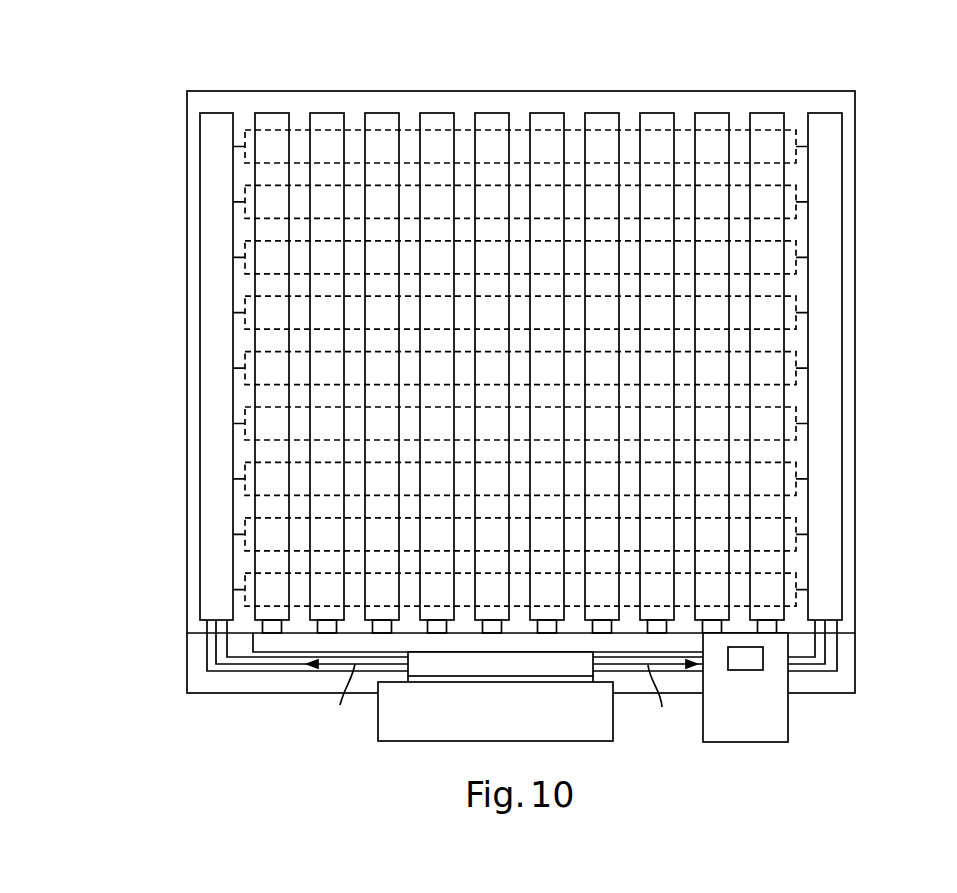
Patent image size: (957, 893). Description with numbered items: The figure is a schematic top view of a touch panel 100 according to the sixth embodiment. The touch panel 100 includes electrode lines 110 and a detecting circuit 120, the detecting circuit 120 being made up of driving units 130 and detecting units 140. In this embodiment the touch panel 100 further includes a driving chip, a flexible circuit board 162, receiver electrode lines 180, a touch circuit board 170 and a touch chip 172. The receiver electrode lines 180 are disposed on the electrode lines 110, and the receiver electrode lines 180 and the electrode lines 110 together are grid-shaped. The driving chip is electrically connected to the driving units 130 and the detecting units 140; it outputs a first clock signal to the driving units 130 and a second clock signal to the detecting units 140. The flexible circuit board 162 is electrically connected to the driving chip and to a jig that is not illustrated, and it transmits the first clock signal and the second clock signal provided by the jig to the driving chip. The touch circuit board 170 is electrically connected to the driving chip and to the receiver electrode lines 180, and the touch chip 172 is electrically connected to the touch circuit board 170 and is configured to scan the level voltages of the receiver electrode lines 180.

The touch panel 100 is at (75, 55).
The electrode lines 110 is at (440, 113).
The detecting circuit 120 is at (218, 102).
The driving units 130 is at (199, 151).
The detecting units 140 is at (843, 151).
The flexible circuit board 162 is at (395, 741).
The touch circuit board 170 is at (788, 717).
The touch chip 172 is at (747, 670).
The receiver electrode lines 180 is at (327, 113).